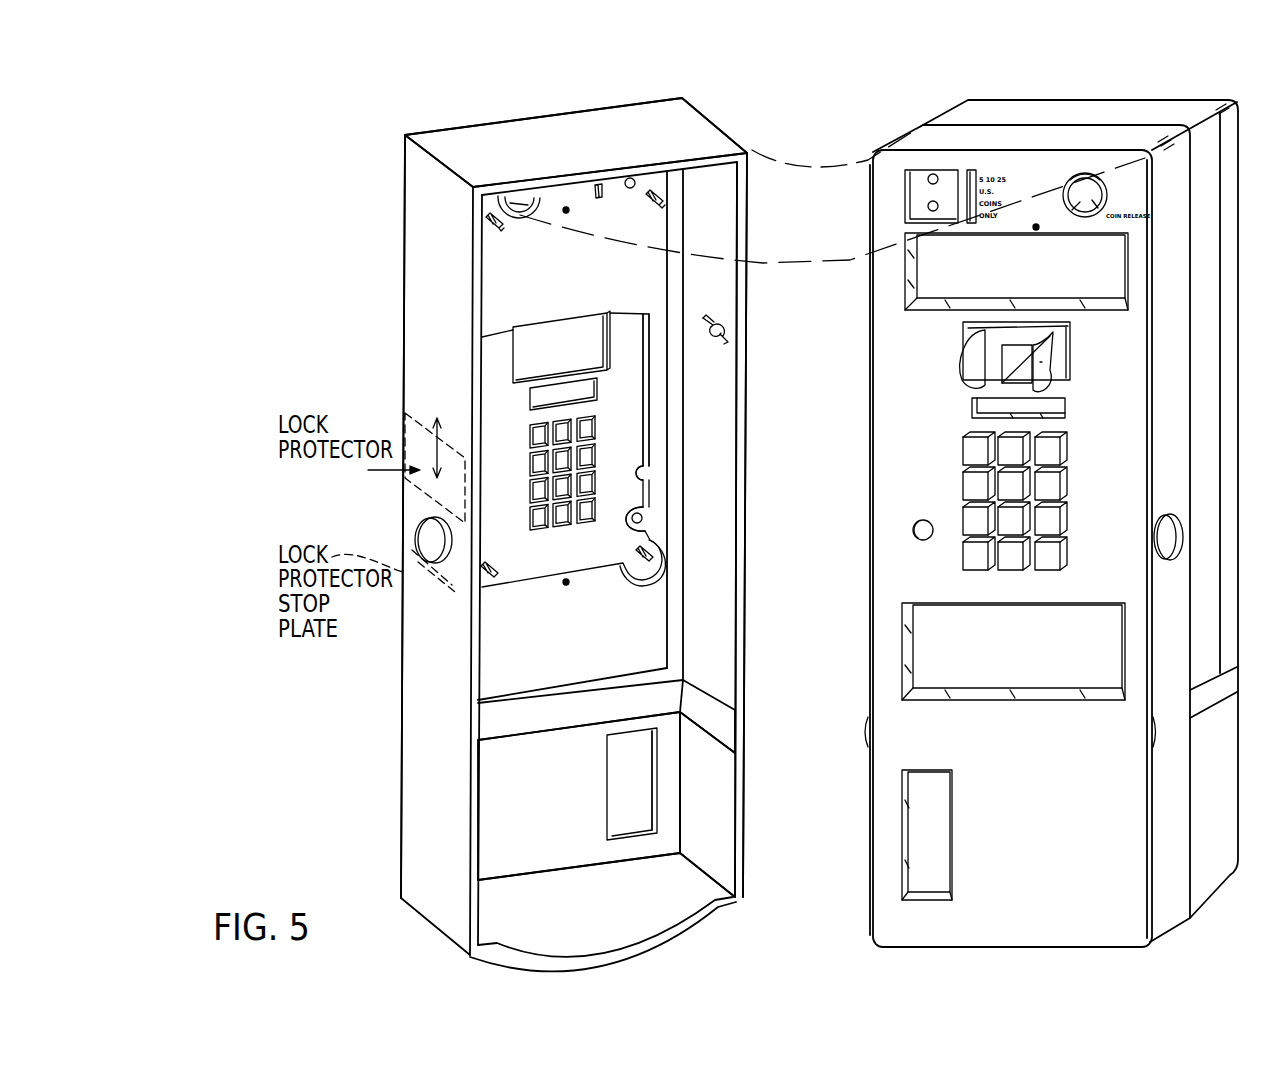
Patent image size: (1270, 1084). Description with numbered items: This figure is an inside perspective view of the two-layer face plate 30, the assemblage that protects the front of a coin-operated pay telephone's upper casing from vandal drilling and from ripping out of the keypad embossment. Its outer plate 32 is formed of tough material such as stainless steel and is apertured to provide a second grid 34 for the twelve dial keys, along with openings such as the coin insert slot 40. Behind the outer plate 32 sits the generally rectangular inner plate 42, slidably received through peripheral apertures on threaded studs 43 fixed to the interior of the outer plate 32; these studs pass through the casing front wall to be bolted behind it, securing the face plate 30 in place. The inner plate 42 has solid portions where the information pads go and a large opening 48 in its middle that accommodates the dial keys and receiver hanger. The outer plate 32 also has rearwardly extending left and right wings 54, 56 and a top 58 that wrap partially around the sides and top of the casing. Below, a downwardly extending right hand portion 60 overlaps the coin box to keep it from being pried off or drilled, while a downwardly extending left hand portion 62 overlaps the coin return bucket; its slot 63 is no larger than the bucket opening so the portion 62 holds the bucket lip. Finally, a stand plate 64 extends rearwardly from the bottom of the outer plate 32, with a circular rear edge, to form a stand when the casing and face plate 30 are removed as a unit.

The two-layer face plate 30 is at (574, 526).
The outer plate 32 is at (498, 392).
The second grid 34 is at (602, 443).
The coin insert slot 40 is at (597, 183).
The inner plate 42 is at (655, 390).
The threaded studs 43 is at (703, 220).
The large opening 48 is at (643, 487).
The left wing 54 is at (726, 278).
The right wing 56 is at (410, 285).
The top 58 is at (466, 149).
The downwardly extending right hand portion 60 is at (495, 812).
The downwardly extending left hand portion 62 is at (670, 745).
The slot 63 is at (640, 787).
The stand plate 64 is at (688, 886).